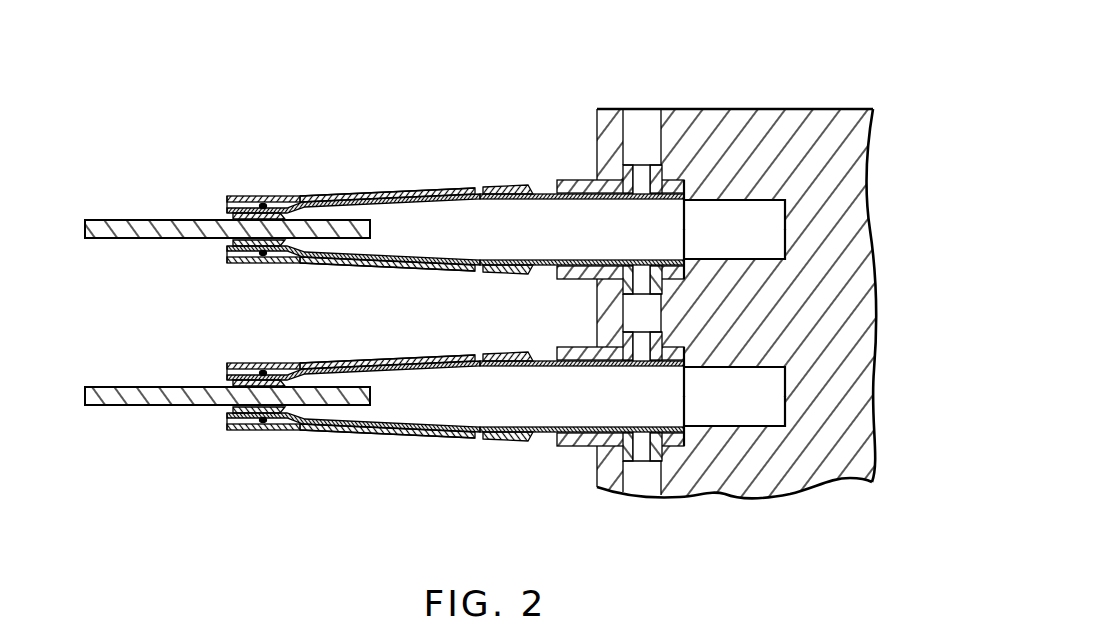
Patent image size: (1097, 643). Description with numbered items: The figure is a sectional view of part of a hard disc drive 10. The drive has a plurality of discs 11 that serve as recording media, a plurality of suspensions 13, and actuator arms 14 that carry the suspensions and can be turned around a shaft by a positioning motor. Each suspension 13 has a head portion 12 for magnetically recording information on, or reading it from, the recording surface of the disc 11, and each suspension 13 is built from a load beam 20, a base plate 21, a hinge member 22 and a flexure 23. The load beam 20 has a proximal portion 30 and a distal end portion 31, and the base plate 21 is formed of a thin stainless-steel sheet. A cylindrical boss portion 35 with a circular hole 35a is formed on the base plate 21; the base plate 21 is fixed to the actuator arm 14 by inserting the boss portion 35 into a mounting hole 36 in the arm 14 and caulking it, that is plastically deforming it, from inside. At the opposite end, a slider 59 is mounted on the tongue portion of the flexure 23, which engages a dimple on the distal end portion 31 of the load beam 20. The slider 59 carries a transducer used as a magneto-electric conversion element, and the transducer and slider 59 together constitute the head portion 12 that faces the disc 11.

The hard disc drive 10 is at (735, 70).
The disc 11 is at (128, 219).
The head portion 12 is at (225, 188).
The suspension 13 is at (446, 178).
The actuator arm 14 is at (686, 109).
The load beam 20 is at (375, 194).
The base plate 21 is at (578, 180).
The hinge member 22 is at (551, 258).
The flexure 23 is at (388, 206).
The proximal portion 30 is at (505, 185).
The distal end portion 31 is at (262, 194).
The boss portion 35 is at (662, 172).
The circular hole 35a is at (636, 166).
The mounting hole 36 is at (626, 132).
The slider 59 is at (231, 212).